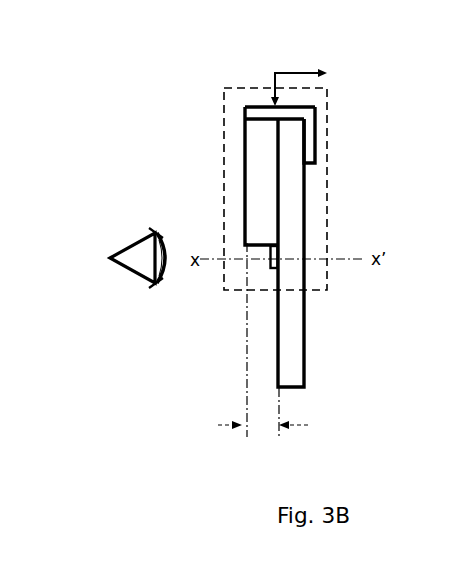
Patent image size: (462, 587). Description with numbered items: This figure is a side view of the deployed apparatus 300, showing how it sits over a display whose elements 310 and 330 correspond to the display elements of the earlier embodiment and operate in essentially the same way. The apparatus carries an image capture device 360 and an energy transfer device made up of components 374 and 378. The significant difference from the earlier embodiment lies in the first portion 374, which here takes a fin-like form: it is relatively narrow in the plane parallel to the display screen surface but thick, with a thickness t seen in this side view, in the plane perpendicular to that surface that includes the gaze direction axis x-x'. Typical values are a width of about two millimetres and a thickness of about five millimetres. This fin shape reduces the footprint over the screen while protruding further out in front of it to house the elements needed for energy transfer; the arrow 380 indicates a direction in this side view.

The apparatus 300 is at (260, 88).
The display element 310 is at (308, 325).
The display element 330 is at (277, 346).
The image capture device 360 is at (271, 270).
The first portion 374 is at (243, 188).
The component of energy transfer device 378 is at (317, 113).
The viewing direction arrow 380 is at (319, 83).